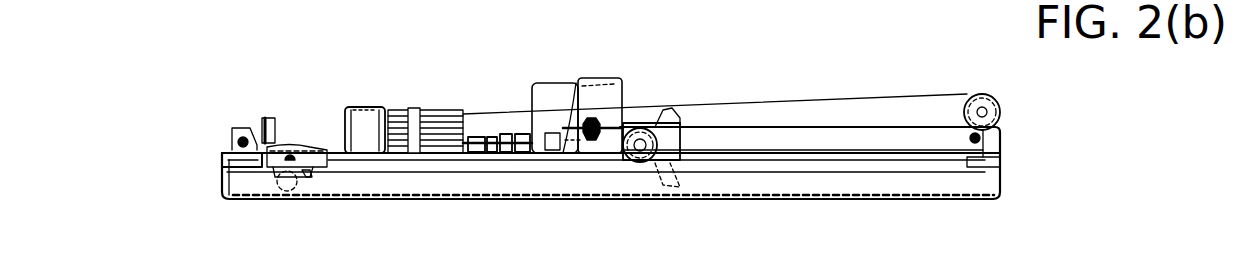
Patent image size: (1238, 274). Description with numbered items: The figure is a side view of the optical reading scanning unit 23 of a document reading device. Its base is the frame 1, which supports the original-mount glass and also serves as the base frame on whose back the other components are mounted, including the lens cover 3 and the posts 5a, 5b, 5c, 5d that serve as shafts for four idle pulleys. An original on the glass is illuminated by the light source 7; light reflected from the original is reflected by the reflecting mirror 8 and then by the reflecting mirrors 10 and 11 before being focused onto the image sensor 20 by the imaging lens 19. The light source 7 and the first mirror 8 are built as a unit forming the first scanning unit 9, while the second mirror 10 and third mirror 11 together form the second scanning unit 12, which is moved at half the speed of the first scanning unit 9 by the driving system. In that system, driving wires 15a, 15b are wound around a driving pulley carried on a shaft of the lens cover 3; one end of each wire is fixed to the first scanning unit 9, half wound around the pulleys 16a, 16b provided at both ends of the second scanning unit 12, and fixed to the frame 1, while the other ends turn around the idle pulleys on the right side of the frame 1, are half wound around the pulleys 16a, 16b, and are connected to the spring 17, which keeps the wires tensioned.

The frame 1 is at (870, 197).
The lens cover 3 is at (548, 151).
The post 5a is at (236, 178).
The post 5b is at (238, 166).
The post 5c is at (1020, 112).
The post 5d is at (996, 110).
The light source 7 is at (292, 191).
The reflecting mirror 8 is at (304, 178).
The first scanning unit 9 is at (310, 146).
The reflecting mirror 10 is at (673, 188).
The reflecting mirror 11 is at (668, 110).
The second scanning unit 12 is at (653, 127).
The driving wire 15a is at (487, 181).
The driving wire 15b is at (478, 161).
The pulley 16a is at (631, 176).
The pulley 16b is at (640, 162).
The spring 17 is at (1002, 160).
The imaging lens 19 is at (349, 107).
The image sensor 20 is at (266, 118).
The optical reading scanning unit 23 is at (201, 75).